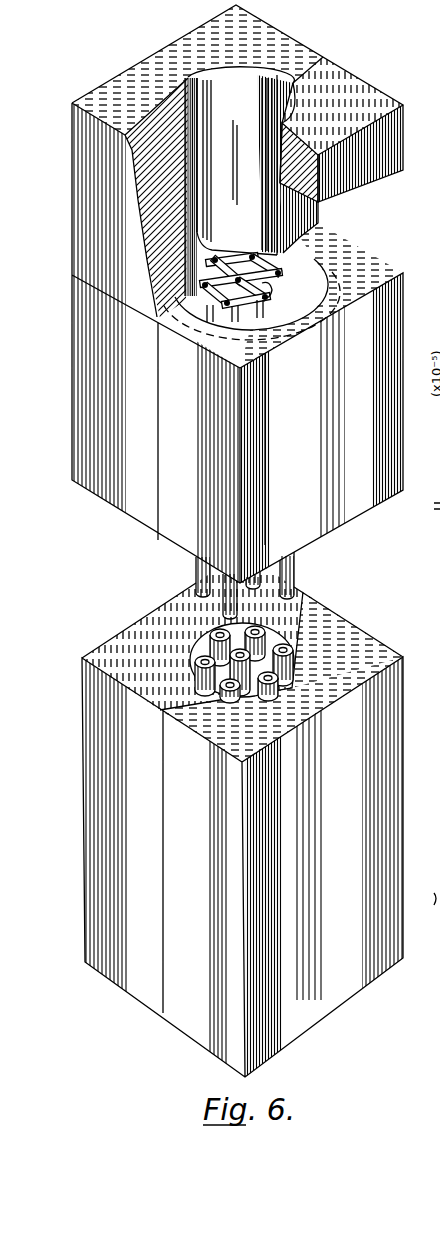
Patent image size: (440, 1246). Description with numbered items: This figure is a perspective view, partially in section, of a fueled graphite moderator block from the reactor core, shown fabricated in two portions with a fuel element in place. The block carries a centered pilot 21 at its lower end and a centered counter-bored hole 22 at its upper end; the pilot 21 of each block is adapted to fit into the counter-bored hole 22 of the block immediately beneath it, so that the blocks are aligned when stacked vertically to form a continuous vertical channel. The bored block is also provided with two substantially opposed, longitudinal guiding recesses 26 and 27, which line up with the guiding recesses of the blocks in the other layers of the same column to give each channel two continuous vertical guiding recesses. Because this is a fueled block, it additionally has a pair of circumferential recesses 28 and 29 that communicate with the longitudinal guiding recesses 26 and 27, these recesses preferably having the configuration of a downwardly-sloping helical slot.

The centered pilot 21 is at (300, 232).
The centered counter-bored hole 22 is at (330, 260).
The longitudinal guiding recess 26 is at (192, 78).
The longitudinal guiding recess 27 is at (283, 128).
The circumferential recess 28 is at (228, 246).
The circumferential recess 29 is at (279, 357).